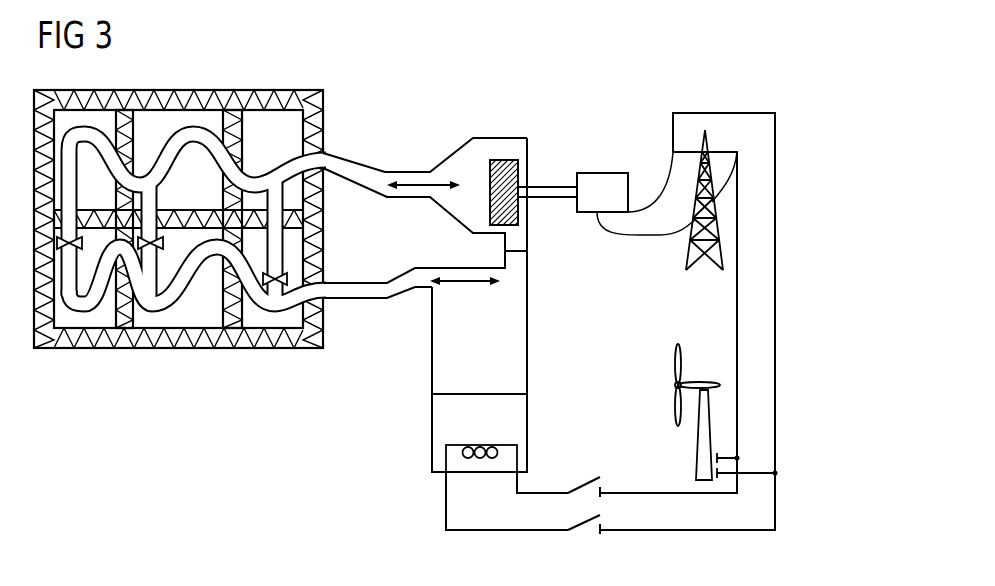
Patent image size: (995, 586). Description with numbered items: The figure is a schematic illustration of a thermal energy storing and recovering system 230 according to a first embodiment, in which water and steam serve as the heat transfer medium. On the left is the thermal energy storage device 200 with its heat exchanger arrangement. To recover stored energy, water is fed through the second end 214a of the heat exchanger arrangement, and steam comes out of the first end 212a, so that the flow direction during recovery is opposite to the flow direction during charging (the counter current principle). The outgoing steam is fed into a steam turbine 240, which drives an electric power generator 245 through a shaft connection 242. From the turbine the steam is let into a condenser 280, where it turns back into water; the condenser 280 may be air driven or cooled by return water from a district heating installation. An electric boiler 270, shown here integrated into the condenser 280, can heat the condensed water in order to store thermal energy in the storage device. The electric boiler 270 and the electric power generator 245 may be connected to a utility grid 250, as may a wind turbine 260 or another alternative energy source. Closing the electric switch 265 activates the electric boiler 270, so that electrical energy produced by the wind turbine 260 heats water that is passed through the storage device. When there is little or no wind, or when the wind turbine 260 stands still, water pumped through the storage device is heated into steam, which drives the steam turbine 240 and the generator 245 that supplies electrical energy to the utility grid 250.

The thermal energy storage device 200 is at (192, 357).
The first end of the heat exchanger arrangement 212a is at (324, 152).
The second end of the heat exchanger arrangement 214a is at (324, 283).
The steam turbine 240 is at (502, 160).
The shaft connection 242 is at (552, 187).
The electric power generator 245 is at (603, 180).
The utility grid 250 is at (702, 152).
The thermal energy storing and recovering system 230 is at (747, 87).
The wind turbine 260 is at (660, 362).
The electric switch 265 is at (594, 473).
The electric boiler 270 is at (446, 453).
The condenser 280 is at (442, 412).